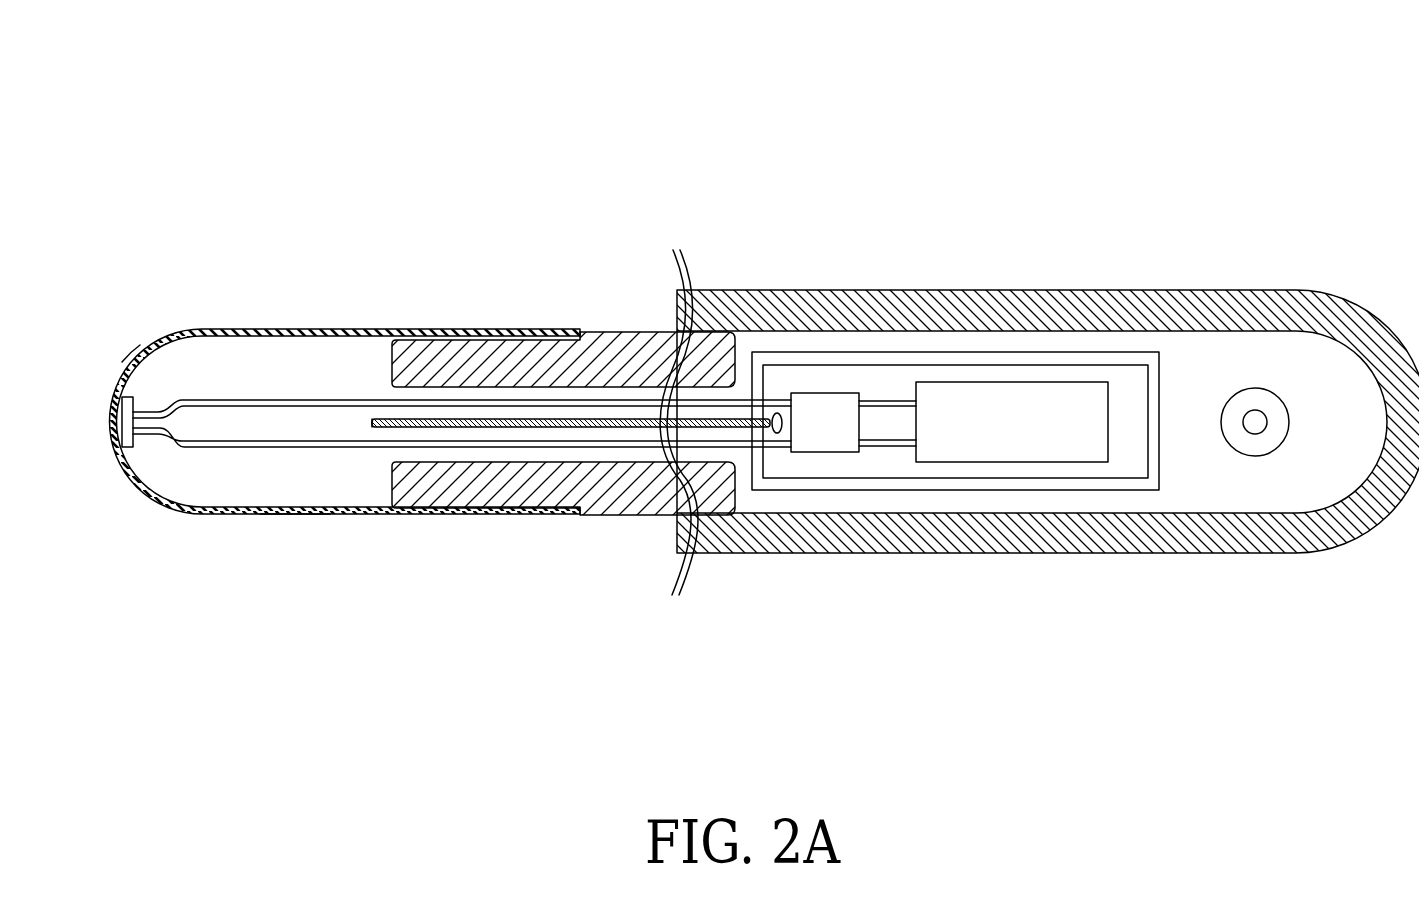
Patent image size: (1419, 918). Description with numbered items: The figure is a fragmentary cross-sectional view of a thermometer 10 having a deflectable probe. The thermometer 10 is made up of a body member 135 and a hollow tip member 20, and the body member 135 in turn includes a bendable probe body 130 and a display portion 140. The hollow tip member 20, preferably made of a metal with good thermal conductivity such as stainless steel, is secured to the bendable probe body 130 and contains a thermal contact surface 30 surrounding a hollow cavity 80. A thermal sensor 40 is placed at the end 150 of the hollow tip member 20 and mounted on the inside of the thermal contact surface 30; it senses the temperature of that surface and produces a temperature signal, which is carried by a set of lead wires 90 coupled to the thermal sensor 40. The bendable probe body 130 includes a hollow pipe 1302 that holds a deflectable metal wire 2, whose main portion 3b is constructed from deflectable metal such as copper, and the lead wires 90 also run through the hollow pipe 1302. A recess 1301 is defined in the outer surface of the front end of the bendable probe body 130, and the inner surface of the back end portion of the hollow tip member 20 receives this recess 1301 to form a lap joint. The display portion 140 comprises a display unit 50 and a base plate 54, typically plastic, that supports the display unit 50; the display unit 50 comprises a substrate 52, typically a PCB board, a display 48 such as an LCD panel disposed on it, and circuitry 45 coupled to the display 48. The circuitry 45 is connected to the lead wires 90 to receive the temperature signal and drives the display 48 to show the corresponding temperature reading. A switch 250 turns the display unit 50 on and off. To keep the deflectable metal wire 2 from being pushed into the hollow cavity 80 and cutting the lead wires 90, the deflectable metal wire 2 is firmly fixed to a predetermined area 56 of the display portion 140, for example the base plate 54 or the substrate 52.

The thermometer 10 is at (1155, 751).
The hollow tip member 20 is at (212, 327).
The thermal contact surface 30 is at (283, 492).
The thermal sensor 40 is at (125, 458).
The circuitry 45 is at (830, 452).
The display 48 is at (1012, 502).
The display unit 50 is at (949, 544).
The substrate 52 is at (1078, 365).
The base plate 54 is at (980, 352).
The predetermined area 56 is at (777, 413).
The hollow cavity 80 is at (293, 512).
The lead wires 90 is at (286, 447).
The bendable probe body 130 is at (563, 438).
The recess 1301 is at (484, 360).
The hollow pipe 1302 is at (445, 478).
The body member 135 is at (833, 148).
The display portion 140 is at (957, 290).
The end 150 is at (122, 362).
The switch 250 is at (1255, 388).
The deflectable metal wire 2 is at (376, 418).
The main portion 3b is at (598, 417).